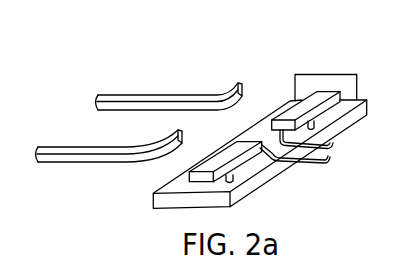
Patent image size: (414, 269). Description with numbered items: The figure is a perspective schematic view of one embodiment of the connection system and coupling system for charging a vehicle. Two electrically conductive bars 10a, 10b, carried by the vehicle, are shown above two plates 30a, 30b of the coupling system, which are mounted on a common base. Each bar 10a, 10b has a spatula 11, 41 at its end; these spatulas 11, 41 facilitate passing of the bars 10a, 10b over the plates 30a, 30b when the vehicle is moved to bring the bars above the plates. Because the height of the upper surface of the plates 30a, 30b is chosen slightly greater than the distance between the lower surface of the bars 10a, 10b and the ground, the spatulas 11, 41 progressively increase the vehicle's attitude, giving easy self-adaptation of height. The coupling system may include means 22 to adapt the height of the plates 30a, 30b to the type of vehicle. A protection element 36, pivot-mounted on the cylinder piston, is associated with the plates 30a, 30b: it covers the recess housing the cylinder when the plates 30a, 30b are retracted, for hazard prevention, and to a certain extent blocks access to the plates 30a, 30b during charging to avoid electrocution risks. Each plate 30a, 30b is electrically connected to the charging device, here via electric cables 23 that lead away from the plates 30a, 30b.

The electrically conductive bar 10a is at (117, 93).
The electrically conductive bar 10b is at (62, 147).
The spatula 11 is at (240, 82).
The spatula 41 is at (157, 139).
The plate 30a is at (295, 112).
The plate 30b is at (184, 170).
The protection element 36 is at (348, 73).
The height adjustment means 22 is at (313, 127).
The electric cable 23 is at (313, 165).